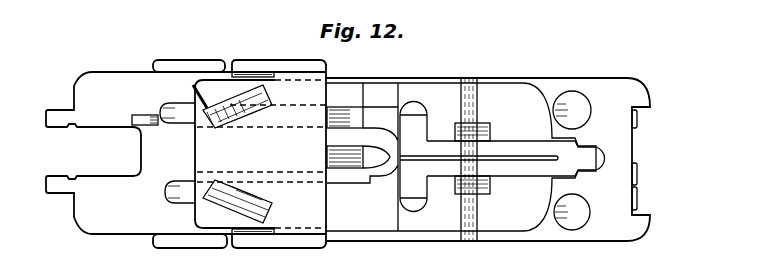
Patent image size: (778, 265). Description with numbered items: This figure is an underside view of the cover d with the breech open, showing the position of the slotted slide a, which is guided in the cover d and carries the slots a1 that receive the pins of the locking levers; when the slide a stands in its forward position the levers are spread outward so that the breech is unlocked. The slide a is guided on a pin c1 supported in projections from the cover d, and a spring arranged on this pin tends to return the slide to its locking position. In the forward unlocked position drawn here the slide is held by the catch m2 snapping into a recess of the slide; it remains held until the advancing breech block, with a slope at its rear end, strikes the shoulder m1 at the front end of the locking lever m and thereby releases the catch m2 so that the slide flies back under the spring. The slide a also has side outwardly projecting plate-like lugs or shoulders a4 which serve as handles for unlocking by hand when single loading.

The slotted slide a is at (197, 150).
The slots of the slide a1 is at (212, 183).
The plate-like lugs or shoulders a4 is at (256, 56).
The locking lever m is at (347, 112).
The shoulder of the locking lever m1 is at (143, 126).
The catch m2 is at (203, 105).
The pin c1 is at (349, 168).
The cover d is at (617, 168).